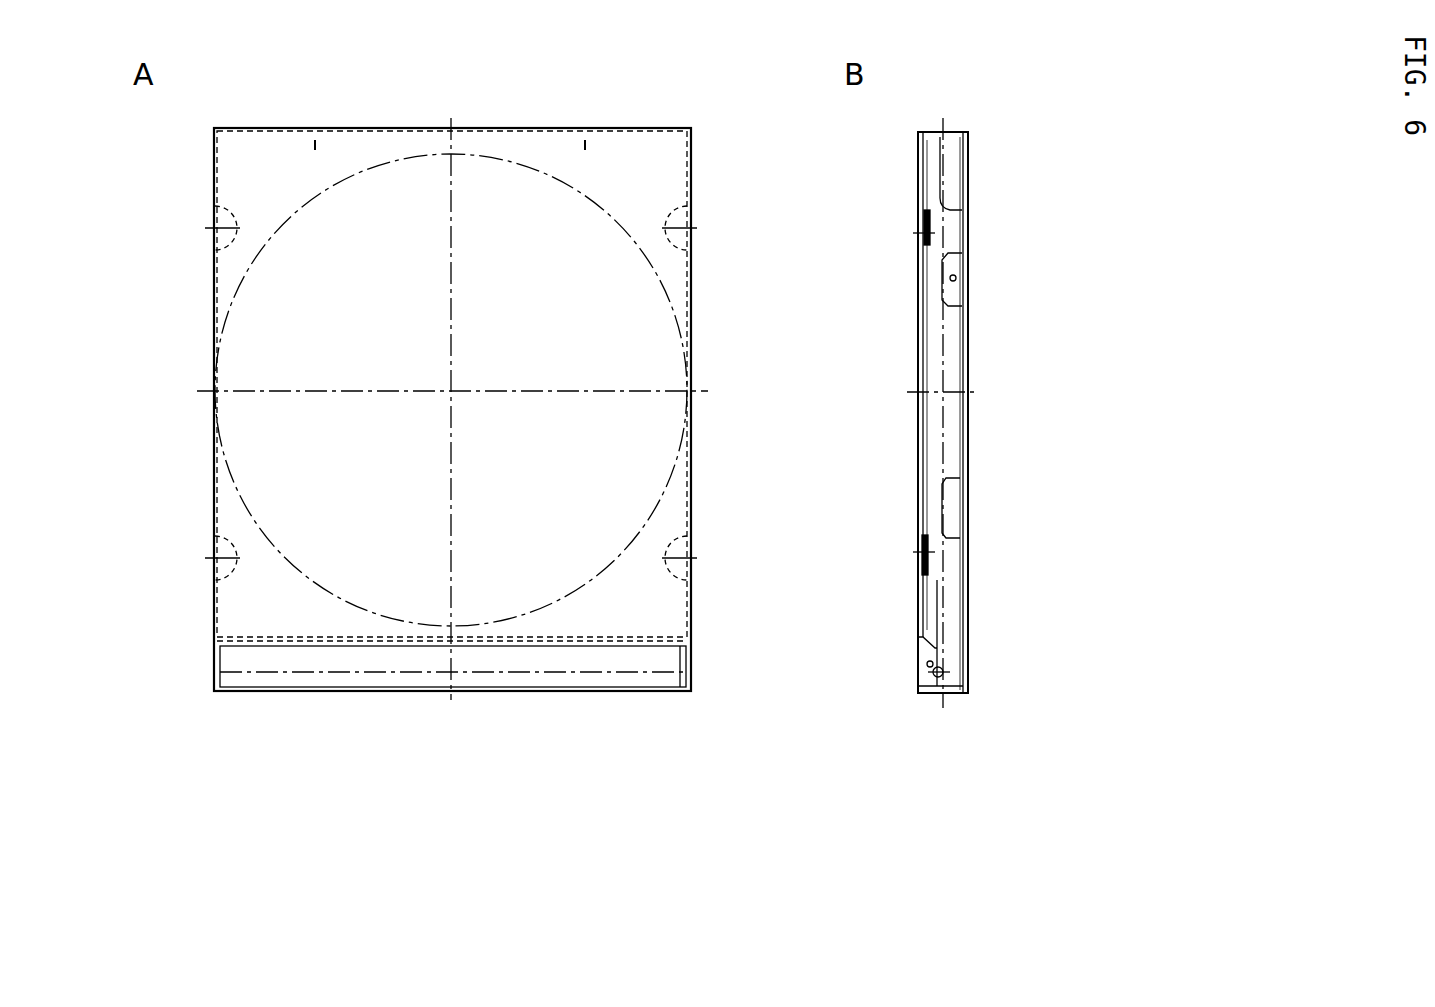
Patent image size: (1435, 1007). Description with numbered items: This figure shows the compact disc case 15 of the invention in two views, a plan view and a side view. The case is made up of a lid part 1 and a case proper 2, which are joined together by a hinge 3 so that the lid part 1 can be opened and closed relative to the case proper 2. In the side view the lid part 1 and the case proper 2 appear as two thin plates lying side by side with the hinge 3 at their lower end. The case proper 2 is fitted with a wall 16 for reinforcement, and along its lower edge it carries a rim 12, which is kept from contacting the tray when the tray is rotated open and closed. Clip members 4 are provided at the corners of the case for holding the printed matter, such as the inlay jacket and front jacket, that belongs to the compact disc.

The lid part 1 is at (682, 306).
The case proper 2 is at (967, 354).
The hinge 3 is at (943, 693).
The clip members 4 is at (688, 196).
The rim 12 is at (578, 690).
The compact disc case 15 is at (705, 523).
The wall 16 is at (948, 508).